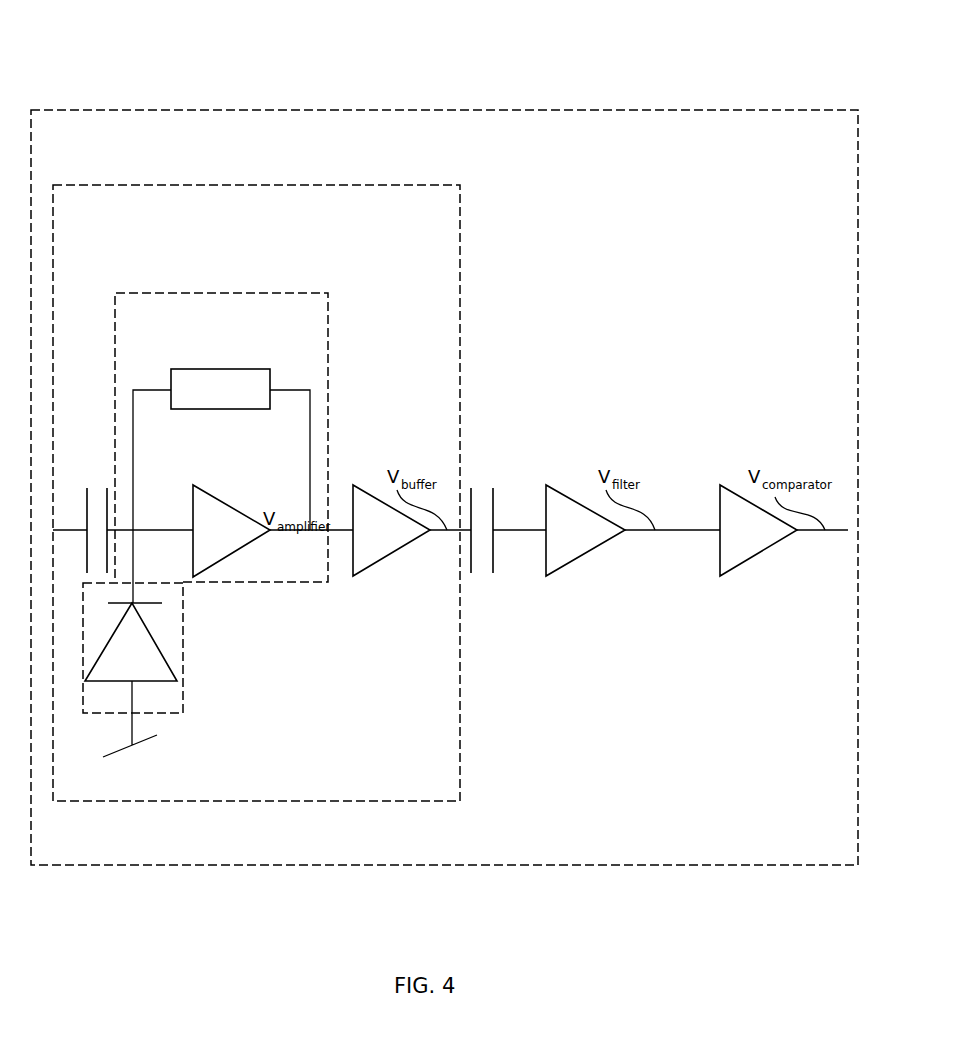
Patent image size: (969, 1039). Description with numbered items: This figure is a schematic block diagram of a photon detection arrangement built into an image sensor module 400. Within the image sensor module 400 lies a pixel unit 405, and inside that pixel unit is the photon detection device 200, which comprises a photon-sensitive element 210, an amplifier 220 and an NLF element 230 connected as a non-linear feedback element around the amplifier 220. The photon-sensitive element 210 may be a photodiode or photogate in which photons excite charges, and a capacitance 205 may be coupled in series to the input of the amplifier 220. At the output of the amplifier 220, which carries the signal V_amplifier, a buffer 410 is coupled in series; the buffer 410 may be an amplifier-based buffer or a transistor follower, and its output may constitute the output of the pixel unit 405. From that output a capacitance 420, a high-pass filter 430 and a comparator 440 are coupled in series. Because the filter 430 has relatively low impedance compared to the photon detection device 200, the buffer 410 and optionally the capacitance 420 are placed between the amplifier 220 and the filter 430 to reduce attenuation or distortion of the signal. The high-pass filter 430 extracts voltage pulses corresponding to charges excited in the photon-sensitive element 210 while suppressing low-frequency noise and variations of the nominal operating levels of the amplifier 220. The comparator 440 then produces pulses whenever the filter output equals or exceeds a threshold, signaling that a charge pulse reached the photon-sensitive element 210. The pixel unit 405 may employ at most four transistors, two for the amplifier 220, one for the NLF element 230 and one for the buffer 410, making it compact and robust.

The image sensor module 400 is at (127, 110).
The pixel unit 405 is at (292, 186).
The photon detection device 200 is at (125, 293).
The capacitance 205 is at (98, 485).
The photon-sensitive element 210 is at (165, 683).
The amplifier 220 is at (256, 541).
The NLF element 230 is at (222, 369).
The buffer 410 is at (412, 541).
The capacitance 420 is at (494, 545).
The high-pass filter 430 is at (603, 541).
The comparator 440 is at (778, 543).